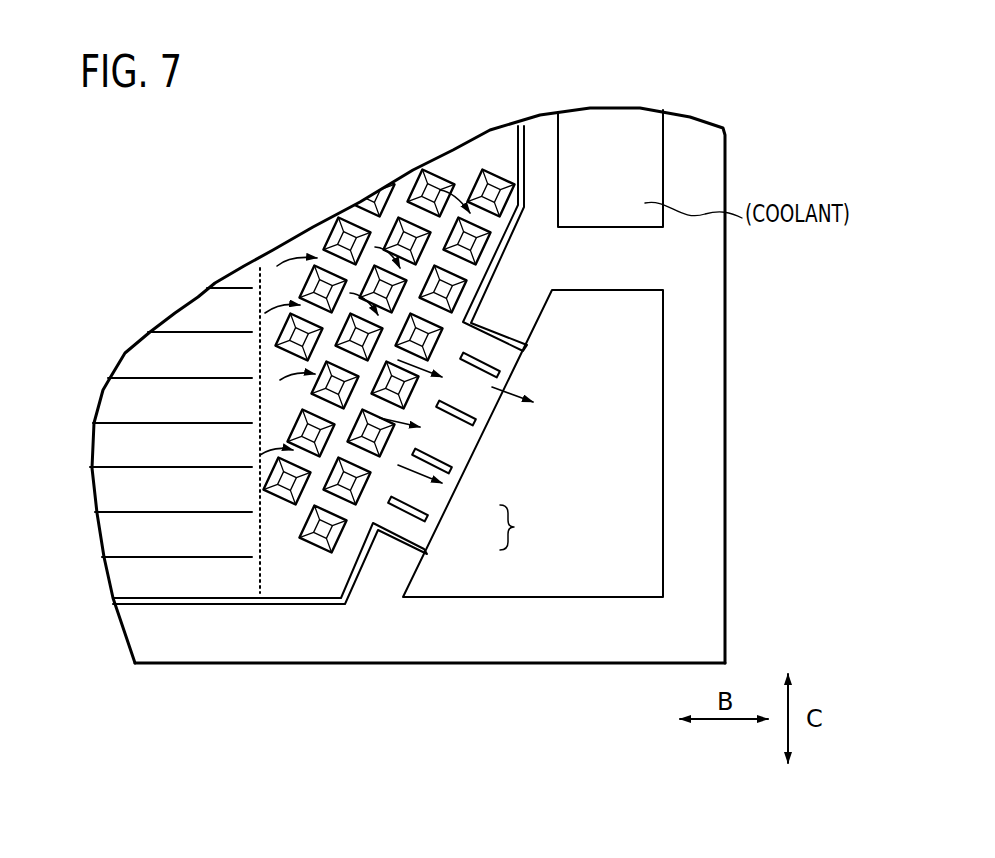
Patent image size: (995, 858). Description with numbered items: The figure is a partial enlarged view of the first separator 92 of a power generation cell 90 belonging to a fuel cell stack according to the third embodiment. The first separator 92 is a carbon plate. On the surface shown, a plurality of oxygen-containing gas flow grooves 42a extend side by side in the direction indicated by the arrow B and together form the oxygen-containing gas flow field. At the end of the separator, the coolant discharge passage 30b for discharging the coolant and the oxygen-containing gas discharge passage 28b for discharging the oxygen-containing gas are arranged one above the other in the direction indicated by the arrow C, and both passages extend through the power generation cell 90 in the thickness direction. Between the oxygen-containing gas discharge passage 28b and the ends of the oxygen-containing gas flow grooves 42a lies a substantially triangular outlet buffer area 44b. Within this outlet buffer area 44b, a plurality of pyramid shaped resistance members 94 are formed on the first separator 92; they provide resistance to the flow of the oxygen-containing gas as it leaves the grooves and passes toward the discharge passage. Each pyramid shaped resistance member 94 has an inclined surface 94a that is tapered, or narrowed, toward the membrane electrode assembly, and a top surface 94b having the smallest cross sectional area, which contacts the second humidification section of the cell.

The power generation cell 90 is at (273, 114).
The first separator 92 is at (305, 666).
The oxygen-containing gas flow grooves 42a is at (117, 492).
The outlet buffer area 44b is at (325, 265).
The coolant discharge passage 30b is at (610, 168).
The oxygen-containing gas discharge passage 28b is at (533, 443).
The pyramid shaped resistance members 94 is at (521, 527).
The inclined surface 94a is at (360, 490).
The top surface 94b is at (363, 467).